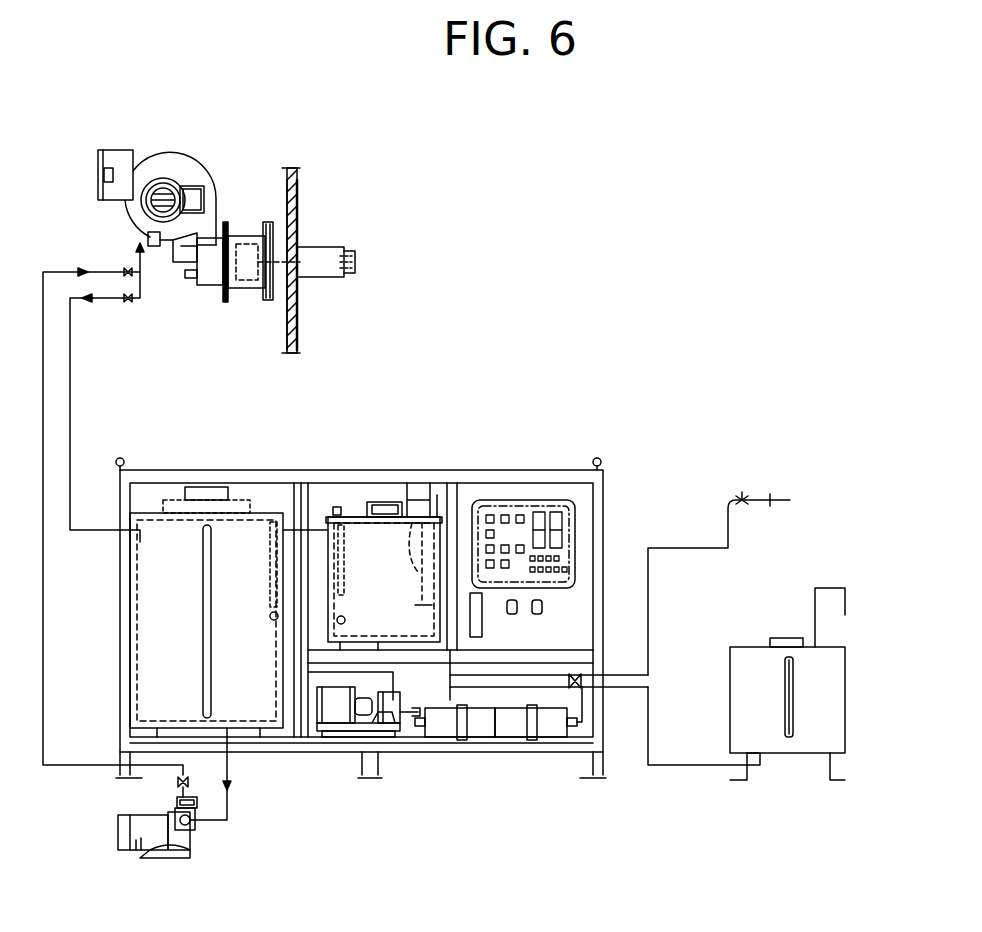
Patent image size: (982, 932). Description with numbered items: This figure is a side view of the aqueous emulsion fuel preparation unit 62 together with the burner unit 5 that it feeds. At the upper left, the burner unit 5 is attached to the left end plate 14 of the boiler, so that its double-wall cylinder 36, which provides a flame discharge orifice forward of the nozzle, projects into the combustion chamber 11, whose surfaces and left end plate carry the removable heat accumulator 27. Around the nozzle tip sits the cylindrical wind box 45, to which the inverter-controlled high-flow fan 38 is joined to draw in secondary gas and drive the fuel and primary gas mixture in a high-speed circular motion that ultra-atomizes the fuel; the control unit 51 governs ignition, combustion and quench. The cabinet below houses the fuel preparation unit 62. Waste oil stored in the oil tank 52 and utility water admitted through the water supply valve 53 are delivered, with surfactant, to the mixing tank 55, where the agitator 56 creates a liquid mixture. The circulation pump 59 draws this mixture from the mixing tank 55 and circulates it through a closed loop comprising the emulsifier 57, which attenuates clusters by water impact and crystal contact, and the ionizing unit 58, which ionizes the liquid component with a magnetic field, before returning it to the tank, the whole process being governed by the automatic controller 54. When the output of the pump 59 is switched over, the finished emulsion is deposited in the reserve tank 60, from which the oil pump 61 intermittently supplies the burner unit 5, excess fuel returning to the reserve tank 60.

The burner unit 5 is at (258, 300).
The combustion chamber 11 is at (350, 197).
The left end plate 14 is at (287, 338).
The heat accumulator 27 is at (299, 346).
The double-wall cylinder 36 is at (313, 264).
The high-flow fan 38 is at (181, 166).
The wind box 45 is at (206, 272).
The control unit 51 is at (121, 157).
The oil tank 52 is at (830, 692).
The water supply valve 53 is at (742, 496).
The automatic controller 54 is at (605, 518).
The mixing tank 55 is at (355, 528).
The agitator 56 is at (416, 520).
The emulsifier 57 is at (445, 728).
The ionizing unit 58 is at (552, 728).
The circulation pump 59 is at (375, 708).
The reserve tank 60 is at (247, 710).
The oil pump 61 is at (197, 833).
The fuel preparation unit 62 is at (480, 832).